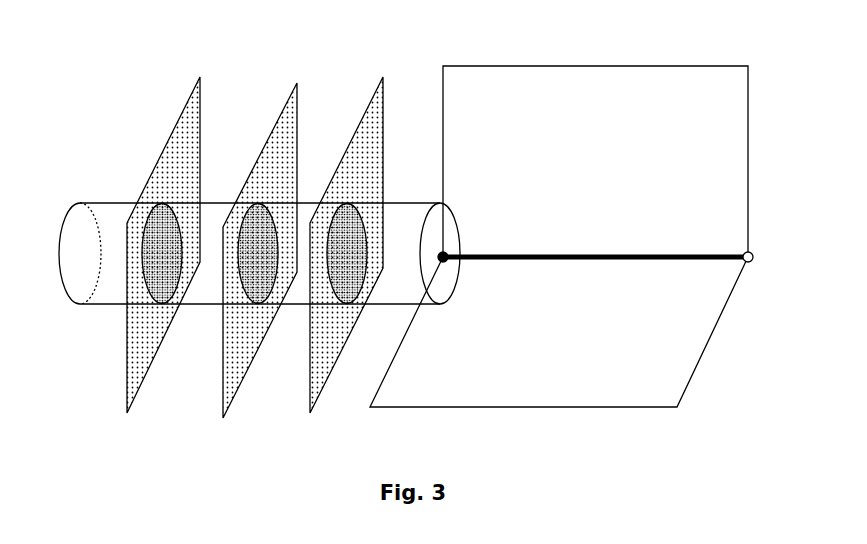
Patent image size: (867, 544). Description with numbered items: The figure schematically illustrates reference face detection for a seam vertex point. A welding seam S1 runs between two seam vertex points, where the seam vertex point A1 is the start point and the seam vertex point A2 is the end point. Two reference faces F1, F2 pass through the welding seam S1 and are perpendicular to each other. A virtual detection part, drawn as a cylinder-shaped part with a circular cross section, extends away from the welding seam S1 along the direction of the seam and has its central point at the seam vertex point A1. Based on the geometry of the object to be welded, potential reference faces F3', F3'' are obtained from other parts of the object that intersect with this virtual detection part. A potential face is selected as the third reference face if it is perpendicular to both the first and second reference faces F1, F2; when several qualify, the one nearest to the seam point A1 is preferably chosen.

The first reference face F1 is at (595, 161).
The second reference face F2 is at (559, 332).
The potential reference face F3' is at (163, 245).
The potential reference face F3'' is at (303, 247).
The welding seam S1 is at (595, 241).
The seam vertex point A1 is at (451, 271).
The seam vertex point A2 is at (758, 271).